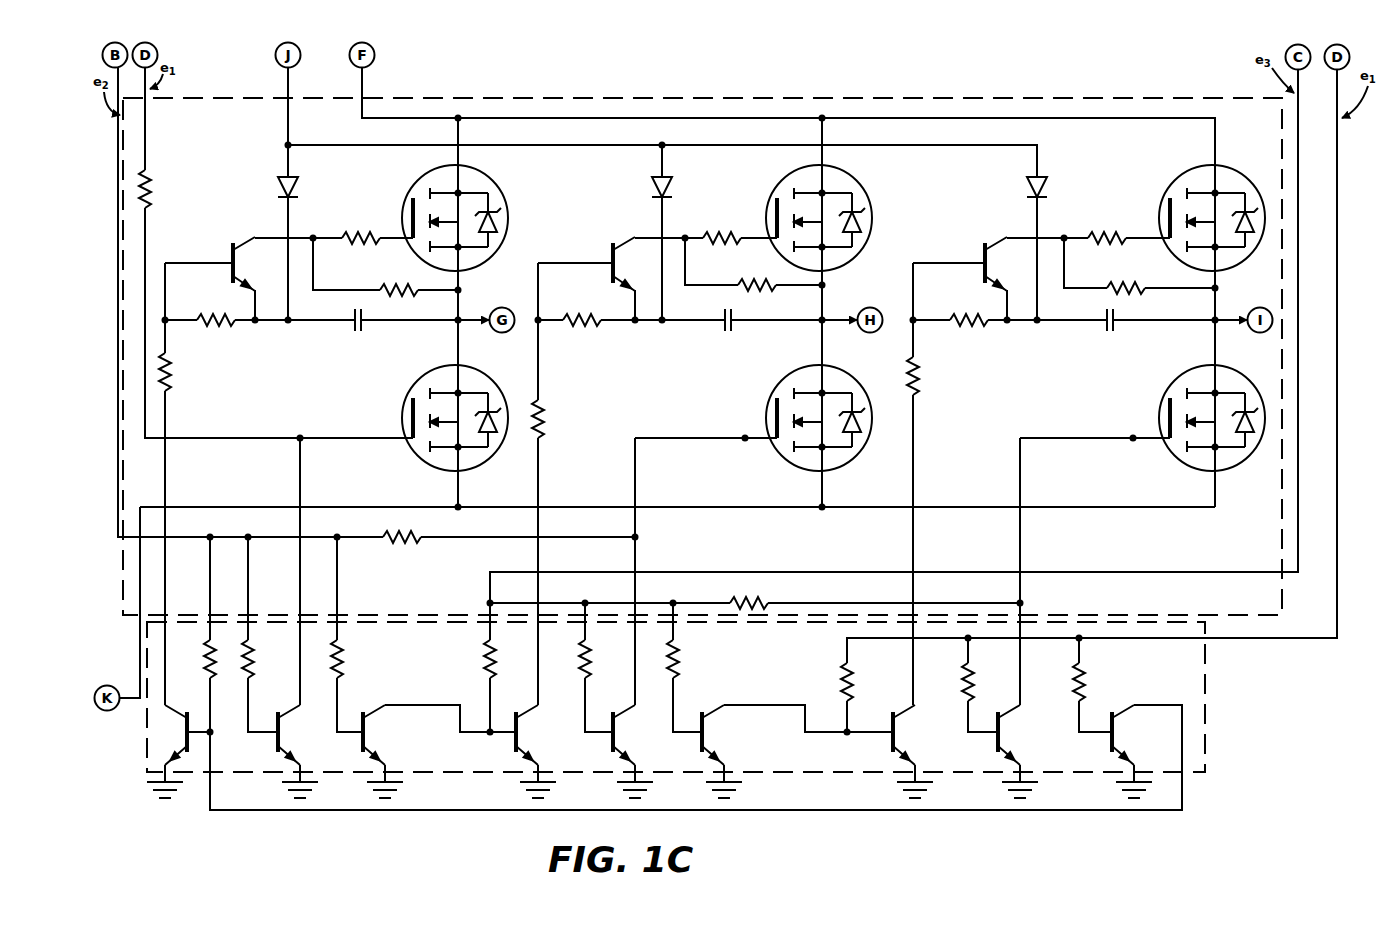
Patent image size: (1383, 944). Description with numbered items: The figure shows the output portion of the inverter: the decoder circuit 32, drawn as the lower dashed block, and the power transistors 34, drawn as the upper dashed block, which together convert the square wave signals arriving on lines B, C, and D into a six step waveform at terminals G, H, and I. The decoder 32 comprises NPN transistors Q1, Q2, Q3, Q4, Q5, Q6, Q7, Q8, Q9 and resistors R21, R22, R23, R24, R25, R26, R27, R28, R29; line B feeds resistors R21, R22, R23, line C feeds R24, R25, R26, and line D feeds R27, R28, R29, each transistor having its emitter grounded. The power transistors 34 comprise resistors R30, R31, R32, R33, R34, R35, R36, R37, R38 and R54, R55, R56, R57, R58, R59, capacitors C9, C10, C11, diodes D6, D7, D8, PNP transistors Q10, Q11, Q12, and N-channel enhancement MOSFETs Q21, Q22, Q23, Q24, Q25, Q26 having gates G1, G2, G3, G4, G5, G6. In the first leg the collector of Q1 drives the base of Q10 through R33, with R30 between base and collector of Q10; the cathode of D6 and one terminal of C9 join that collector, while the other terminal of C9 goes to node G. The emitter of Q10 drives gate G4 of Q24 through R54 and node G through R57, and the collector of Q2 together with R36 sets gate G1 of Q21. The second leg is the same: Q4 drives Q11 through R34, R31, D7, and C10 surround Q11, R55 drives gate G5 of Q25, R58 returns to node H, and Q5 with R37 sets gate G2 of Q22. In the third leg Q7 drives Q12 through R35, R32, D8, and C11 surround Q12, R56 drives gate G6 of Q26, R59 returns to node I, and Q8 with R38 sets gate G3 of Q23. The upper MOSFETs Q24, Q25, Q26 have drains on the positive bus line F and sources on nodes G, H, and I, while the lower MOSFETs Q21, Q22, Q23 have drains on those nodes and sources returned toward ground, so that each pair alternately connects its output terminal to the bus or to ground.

The power transistors 34 is at (773, 96).
The decoder circuit 32 is at (1209, 740).
The resistor R36 is at (160, 189).
The resistor R33 is at (180, 372).
The resistor R34 is at (554, 419).
The resistor R35 is at (929, 376).
The resistor R30 is at (216, 329).
The resistor R31 is at (582, 329).
The resistor R32 is at (969, 329).
The resistor R54 is at (361, 230).
The resistor R55 is at (722, 230).
The resistor R56 is at (1107, 230).
The resistor R57 is at (399, 283).
The resistor R58 is at (757, 278).
The resistor R59 is at (1126, 281).
The resistor R37 is at (402, 545).
The resistor R38 is at (749, 596).
The resistor R21 is at (196, 661).
The resistor R22 is at (264, 661).
The resistor R23 is at (353, 661).
The resistor R24 is at (505, 661).
The resistor R25 is at (600, 661).
The resistor R26 is at (689, 661).
The resistor R27 is at (863, 682).
The resistor R28 is at (983, 682).
The resistor R29 is at (1094, 682).
The capacitor C9 is at (372, 327).
The capacitor C10 is at (746, 327).
The capacitor C11 is at (1127, 327).
The diode D6 is at (299, 187).
The diode D7 is at (673, 187).
The diode D8 is at (1048, 187).
The power MOSFET transistor Q24 is at (455, 210).
The power MOSFET transistor Q25 is at (819, 210).
The power MOSFET transistor Q26 is at (1212, 212).
The power MOSFET transistor Q21 is at (455, 410).
The power MOSFET transistor Q22 is at (819, 409).
The power MOSFET transistor Q23 is at (1212, 410).
The PNP transistor Q10 is at (225, 264).
The PNP transistor Q11 is at (609, 264).
The PNP transistor Q12 is at (977, 264).
The NPN transistor Q1 is at (167, 751).
The NPN transistor Q2 is at (298, 751).
The NPN transistor Q3 is at (383, 751).
The NPN transistor Q4 is at (536, 751).
The NPN transistor Q5 is at (633, 751).
The NPN transistor Q6 is at (722, 751).
The NPN transistor Q7 is at (913, 751).
The NPN transistor Q8 is at (1018, 751).
The NPN transistor Q9 is at (1132, 751).
The gate G1 is at (409, 418).
The gate G2 is at (773, 411).
The gate G3 is at (1166, 414).
The gate G4 is at (409, 213).
The gate G5 is at (773, 213).
The gate G6 is at (1166, 210).